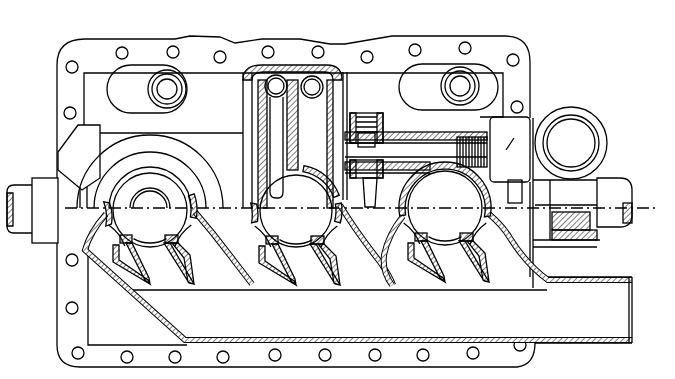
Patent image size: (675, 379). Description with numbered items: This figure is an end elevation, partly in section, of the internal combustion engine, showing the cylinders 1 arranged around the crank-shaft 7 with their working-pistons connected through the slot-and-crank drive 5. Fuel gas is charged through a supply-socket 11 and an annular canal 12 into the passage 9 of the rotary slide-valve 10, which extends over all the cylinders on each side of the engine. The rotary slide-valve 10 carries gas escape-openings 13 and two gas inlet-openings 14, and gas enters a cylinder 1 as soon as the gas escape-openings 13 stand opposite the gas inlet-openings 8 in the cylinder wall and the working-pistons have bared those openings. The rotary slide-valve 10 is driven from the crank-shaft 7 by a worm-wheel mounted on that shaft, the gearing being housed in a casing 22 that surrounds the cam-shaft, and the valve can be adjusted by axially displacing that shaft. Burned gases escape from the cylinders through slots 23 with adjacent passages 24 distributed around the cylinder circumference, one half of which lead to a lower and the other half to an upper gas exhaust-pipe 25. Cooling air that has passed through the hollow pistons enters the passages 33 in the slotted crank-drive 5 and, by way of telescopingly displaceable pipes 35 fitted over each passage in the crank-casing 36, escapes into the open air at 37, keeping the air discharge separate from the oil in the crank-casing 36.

The cylinder 1 is at (133, 246).
The slot-and-crank drive 5 is at (298, 135).
The crank-shaft 7 is at (20, 190).
The gas inlet-opening 8 is at (437, 168).
The passage 9 is at (405, 150).
The rotary slide-valve 10 is at (430, 133).
The supply-socket 11 is at (363, 117).
The annular canal 12 is at (380, 142).
The gas escape-opening 13 is at (440, 175).
The gas inlet-opening 14 is at (373, 163).
The casing 22 is at (597, 127).
The slot 23 is at (110, 237).
The passage 24 is at (118, 288).
The gas exhaust-pipe 25 is at (597, 325).
The passage 33 is at (272, 125).
The telescopingly displaceable pipe 35 is at (305, 70).
The crank-casing 36 is at (303, 75).
The air outlet 37 is at (168, 88).